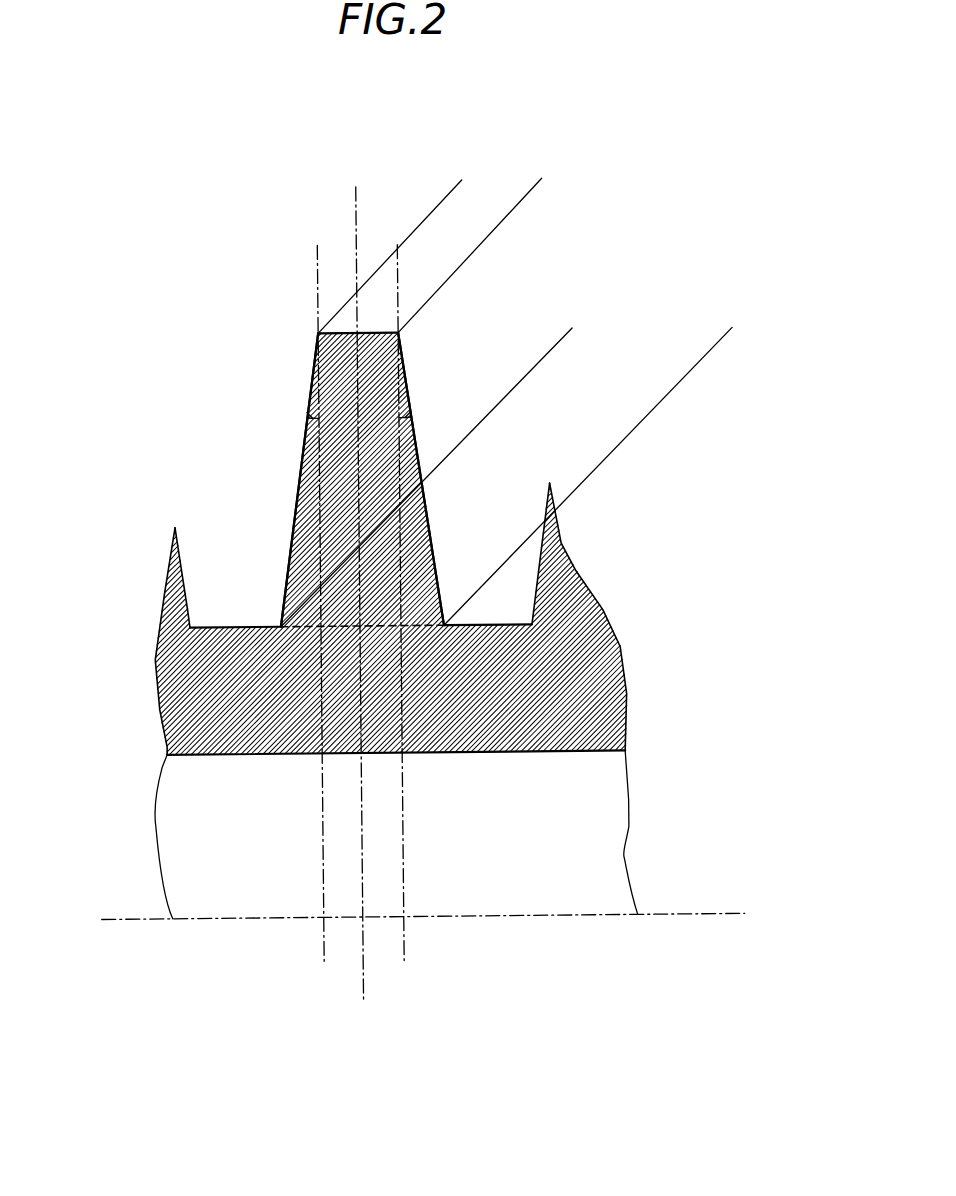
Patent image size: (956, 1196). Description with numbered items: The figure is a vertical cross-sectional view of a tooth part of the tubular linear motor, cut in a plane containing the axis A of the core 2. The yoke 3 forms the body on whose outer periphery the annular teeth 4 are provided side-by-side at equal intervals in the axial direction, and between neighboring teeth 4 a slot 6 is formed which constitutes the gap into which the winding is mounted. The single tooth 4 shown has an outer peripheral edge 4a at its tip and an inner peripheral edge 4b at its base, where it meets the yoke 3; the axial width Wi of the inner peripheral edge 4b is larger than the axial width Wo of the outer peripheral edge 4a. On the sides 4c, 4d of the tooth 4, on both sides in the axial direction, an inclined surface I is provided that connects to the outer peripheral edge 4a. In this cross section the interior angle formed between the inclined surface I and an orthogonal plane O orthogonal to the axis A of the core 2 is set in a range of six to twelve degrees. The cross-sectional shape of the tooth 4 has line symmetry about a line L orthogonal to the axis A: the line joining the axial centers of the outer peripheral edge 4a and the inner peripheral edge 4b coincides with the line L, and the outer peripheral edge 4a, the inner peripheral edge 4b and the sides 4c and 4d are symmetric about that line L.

The core 2 is at (148, 678).
The yoke 3 is at (616, 692).
The teeth 4 is at (352, 425).
The outer peripheral edge 4a is at (347, 332).
The inner peripheral edge 4b is at (278, 589).
The side 4c is at (424, 494).
The side 4d is at (289, 529).
The slot 6 is at (217, 601).
The inclined surface I is at (311, 392).
The axial width of outer peripheral edge Wo is at (449, 199).
The axial width of inner peripheral edge Wi is at (548, 356).
The orthogonal plane O is at (322, 930).
The line L is at (362, 977).
The axis A is at (658, 916).